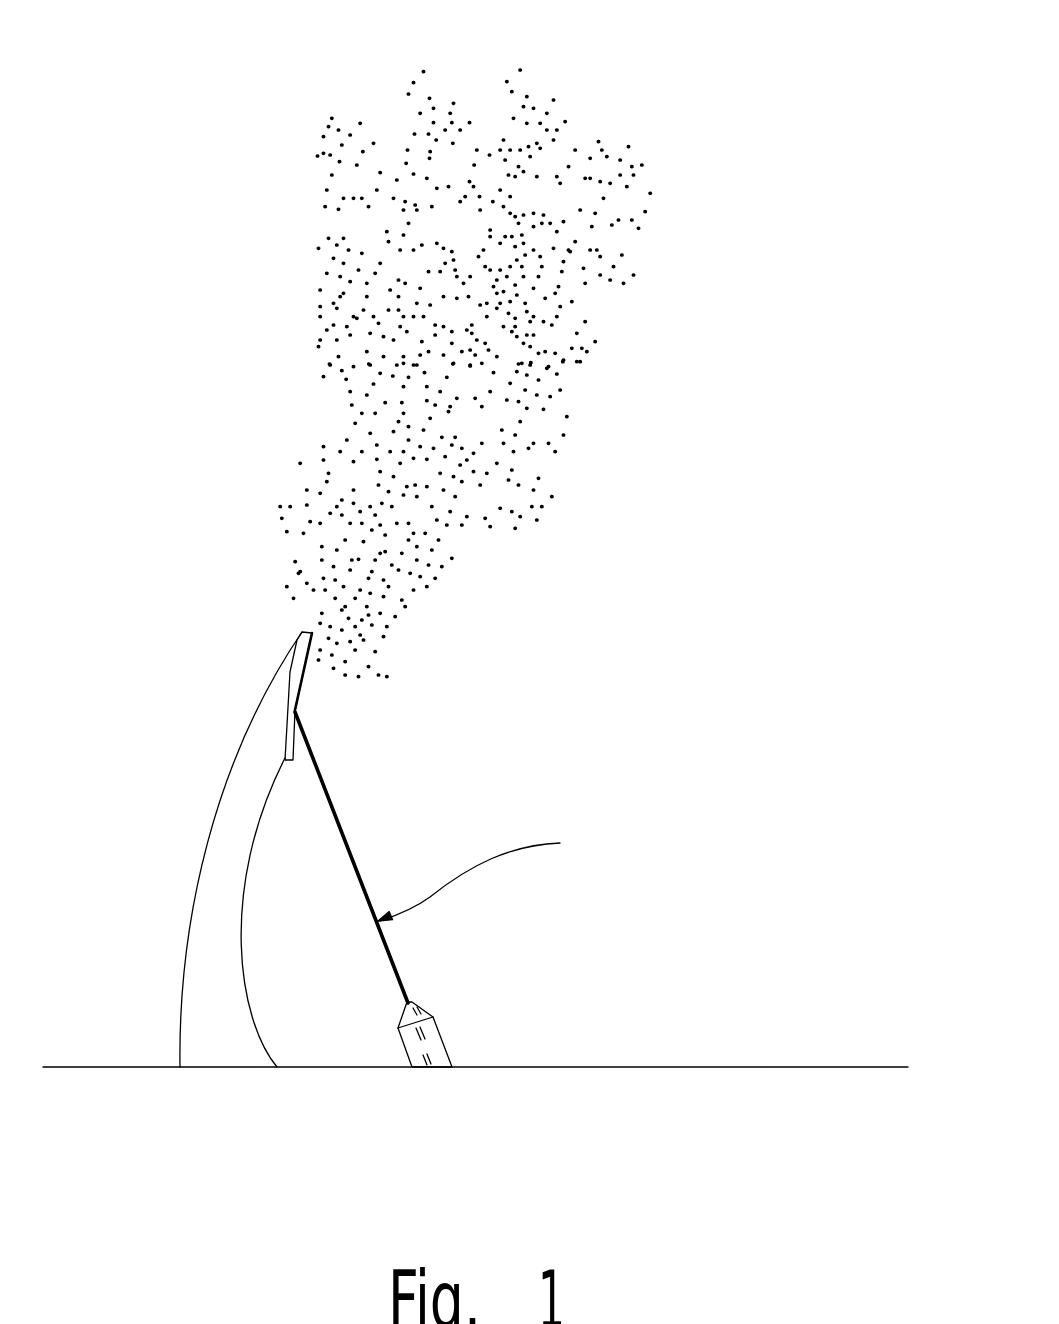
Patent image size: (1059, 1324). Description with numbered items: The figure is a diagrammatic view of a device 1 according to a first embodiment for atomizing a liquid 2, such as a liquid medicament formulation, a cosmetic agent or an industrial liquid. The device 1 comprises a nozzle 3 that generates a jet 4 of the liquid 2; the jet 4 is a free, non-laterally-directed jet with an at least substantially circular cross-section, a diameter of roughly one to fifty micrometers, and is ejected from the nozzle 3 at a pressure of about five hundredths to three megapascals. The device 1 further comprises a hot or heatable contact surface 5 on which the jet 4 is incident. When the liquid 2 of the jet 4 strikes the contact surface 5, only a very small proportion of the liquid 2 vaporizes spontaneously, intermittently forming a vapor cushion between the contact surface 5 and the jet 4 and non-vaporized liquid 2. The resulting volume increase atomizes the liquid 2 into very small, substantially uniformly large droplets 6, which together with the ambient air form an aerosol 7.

The device 1 is at (203, 630).
The liquid 2 is at (341, 824).
The nozzle 3 is at (432, 1043).
The jet 4 is at (486, 872).
The contact surface 5 is at (300, 681).
The droplets 6 is at (565, 295).
The aerosol 7 is at (637, 125).